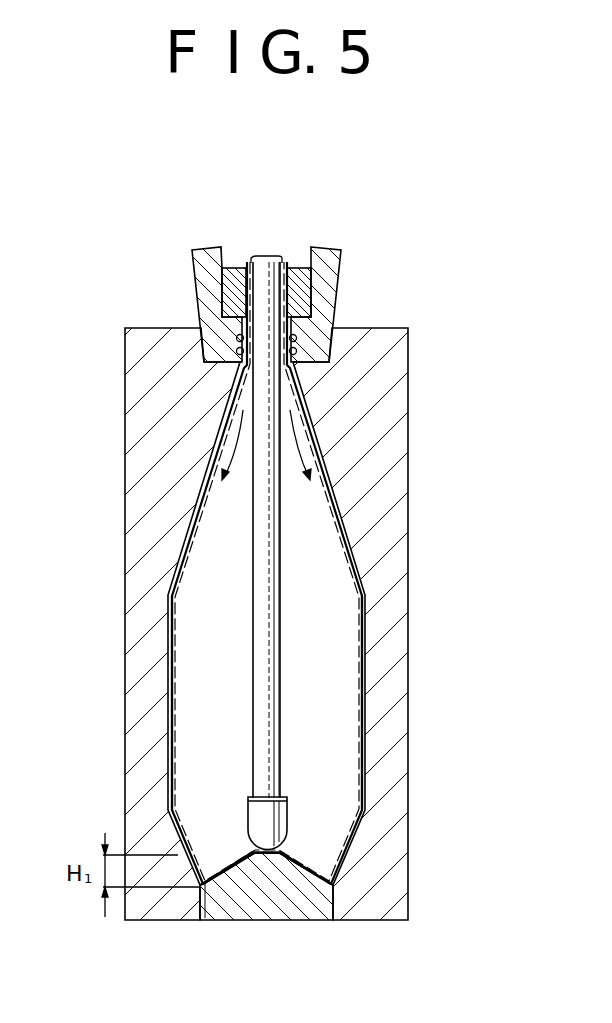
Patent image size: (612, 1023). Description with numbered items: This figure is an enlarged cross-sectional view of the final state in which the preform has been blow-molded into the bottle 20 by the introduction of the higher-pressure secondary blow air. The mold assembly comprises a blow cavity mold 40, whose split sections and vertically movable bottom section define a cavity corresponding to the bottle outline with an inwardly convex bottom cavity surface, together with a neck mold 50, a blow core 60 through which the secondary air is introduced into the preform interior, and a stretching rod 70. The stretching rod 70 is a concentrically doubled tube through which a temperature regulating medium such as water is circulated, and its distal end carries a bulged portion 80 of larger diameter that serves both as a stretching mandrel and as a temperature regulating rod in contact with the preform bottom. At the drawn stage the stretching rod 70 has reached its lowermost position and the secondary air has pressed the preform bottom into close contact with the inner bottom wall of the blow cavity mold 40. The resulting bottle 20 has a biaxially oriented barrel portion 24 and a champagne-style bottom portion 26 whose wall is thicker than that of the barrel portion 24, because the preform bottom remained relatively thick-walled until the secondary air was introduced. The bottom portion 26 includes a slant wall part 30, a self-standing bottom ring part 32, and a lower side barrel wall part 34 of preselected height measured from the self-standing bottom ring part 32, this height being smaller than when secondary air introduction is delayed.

The bottle 20 is at (325, 517).
The barrel portion 24 is at (364, 728).
The bottom portion 26 is at (305, 853).
The slant wall part 30 is at (245, 918).
The self-standing bottom ring part 32 is at (213, 897).
The lower side barrel wall part 34 is at (172, 895).
The blow cavity mold 40 is at (392, 604).
The neck mold 50 is at (328, 295).
The blow core 60 is at (296, 266).
The stretching rod 70 is at (270, 678).
The bulged portion 80 is at (276, 820).